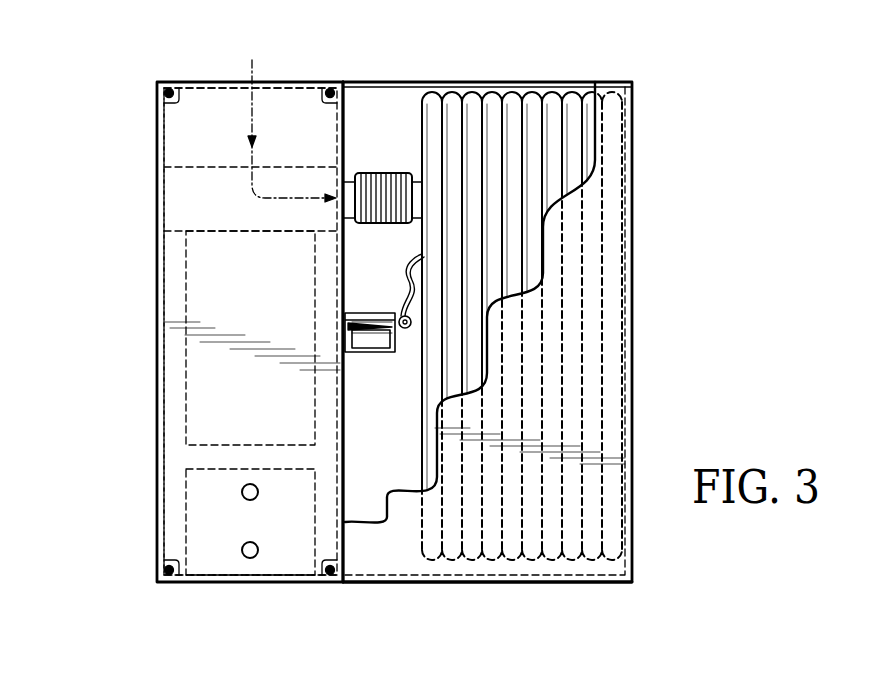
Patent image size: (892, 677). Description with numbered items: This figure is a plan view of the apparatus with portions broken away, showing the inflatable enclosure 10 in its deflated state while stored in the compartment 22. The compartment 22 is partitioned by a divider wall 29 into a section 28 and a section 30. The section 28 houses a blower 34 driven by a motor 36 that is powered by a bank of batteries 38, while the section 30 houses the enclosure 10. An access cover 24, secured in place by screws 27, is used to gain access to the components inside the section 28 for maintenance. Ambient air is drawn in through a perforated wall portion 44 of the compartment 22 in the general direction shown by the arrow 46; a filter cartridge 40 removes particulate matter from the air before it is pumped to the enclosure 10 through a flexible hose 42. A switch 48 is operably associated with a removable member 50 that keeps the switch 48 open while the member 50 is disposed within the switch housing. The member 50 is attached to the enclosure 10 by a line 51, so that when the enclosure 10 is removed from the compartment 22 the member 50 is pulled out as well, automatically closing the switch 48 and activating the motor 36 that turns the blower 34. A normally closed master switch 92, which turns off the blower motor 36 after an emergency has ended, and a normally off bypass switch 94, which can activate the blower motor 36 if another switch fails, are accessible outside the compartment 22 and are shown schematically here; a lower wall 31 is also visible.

The enclosure 10 is at (530, 113).
The compartment 22 is at (148, 242).
The access cover 24 is at (200, 110).
The screws 27 is at (165, 92).
The section 28 is at (175, 368).
The divider wall 29 is at (347, 117).
The section 30 is at (383, 545).
The lower wall 31 is at (205, 565).
The blower 34 is at (204, 199).
The motor 36 is at (215, 302).
The bank of batteries 38 is at (207, 500).
The filter cartridge 40 is at (187, 142).
The flexible hose 42 is at (385, 173).
The perforated wall portion 44 is at (220, 80).
The arrow 46 is at (254, 120).
The switch 48 is at (370, 352).
The removable member 50 is at (372, 325).
The line 51 is at (403, 278).
The master switch 92 is at (250, 558).
The bypass switch 94 is at (250, 484).